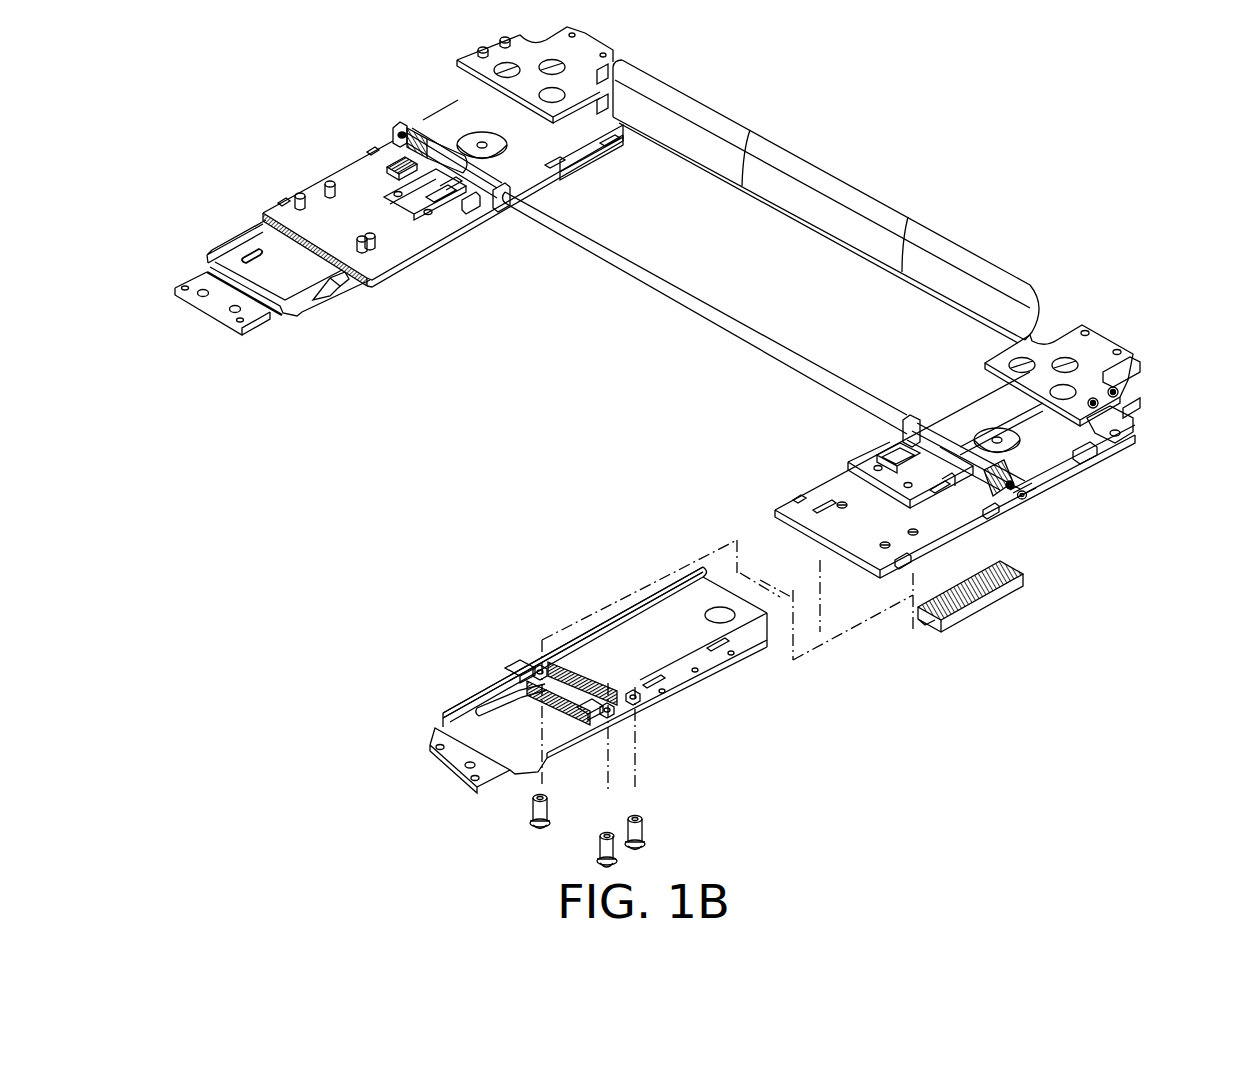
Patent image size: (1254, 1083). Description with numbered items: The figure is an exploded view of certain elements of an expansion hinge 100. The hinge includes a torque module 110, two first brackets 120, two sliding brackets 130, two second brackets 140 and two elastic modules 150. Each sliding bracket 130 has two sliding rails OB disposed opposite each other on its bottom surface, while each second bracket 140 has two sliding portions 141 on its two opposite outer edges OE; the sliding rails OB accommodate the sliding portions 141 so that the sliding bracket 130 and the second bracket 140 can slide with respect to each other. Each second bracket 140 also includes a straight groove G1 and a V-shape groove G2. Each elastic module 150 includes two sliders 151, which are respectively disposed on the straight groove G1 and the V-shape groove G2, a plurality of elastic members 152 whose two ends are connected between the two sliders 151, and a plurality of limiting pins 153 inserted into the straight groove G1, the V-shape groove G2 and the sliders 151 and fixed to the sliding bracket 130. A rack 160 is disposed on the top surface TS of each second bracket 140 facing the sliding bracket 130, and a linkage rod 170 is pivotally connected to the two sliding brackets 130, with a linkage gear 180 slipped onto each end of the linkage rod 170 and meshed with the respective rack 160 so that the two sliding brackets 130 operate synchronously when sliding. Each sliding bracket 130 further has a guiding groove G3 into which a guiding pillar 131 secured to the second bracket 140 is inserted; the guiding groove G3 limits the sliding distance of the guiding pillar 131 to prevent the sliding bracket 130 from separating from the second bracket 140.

The expansion hinge 100 is at (1245, 725).
The torque module 110 is at (835, 215).
The first bracket 120 is at (1095, 352).
The sliding bracket 130 is at (955, 508).
The guiding pillar 131 is at (1045, 486).
The second bracket 140 is at (705, 655).
The sliding portion 141 is at (735, 640).
The elastic module 150 is at (470, 556).
The slider 151 is at (515, 672).
The elastic member 152 is at (525, 690).
The limiting pin 153 is at (478, 712).
The rack 160 is at (990, 602).
The linkage rod 170 is at (672, 294).
The linkage gear 180 is at (1000, 488).
The straight groove G1 is at (258, 250).
The V-shape groove G2 is at (355, 292).
The guiding groove G3 is at (1060, 430).
The outer edge OE is at (206, 250).
The sliding rail OB is at (783, 520).
The top surface TS is at (598, 662).